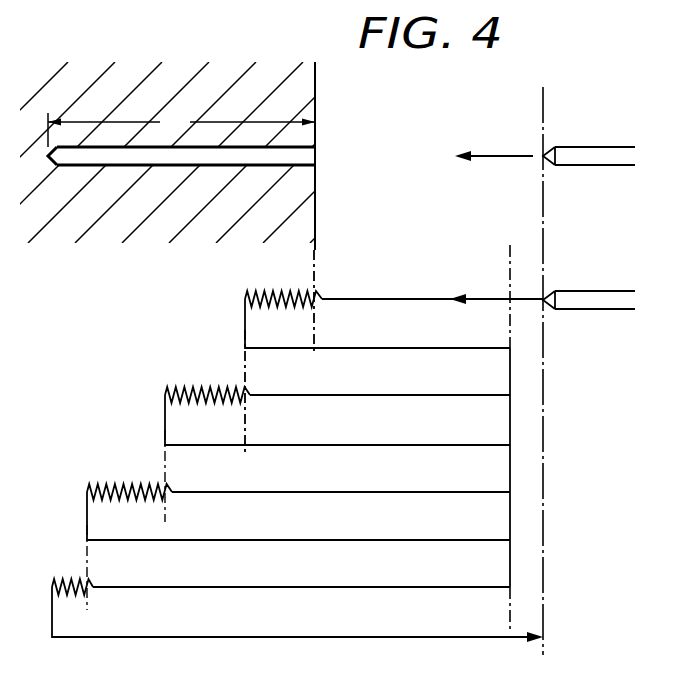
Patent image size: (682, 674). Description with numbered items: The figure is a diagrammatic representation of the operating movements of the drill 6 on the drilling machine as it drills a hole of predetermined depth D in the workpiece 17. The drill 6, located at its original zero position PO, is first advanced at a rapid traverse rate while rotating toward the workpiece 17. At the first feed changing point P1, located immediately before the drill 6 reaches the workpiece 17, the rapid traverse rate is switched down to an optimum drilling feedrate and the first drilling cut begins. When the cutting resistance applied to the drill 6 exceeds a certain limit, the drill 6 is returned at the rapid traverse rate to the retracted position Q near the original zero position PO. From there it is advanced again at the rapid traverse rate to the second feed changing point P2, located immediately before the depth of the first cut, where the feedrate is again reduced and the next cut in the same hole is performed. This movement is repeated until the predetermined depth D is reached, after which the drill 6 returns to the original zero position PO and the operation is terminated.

The workpiece 17 is at (316, 100).
The drill 6 is at (588, 152).
The predetermined depth D is at (181, 128).
The original zero position PO is at (545, 358).
The retracted position Q is at (510, 423).
The first feed changing point P1 is at (321, 297).
The second feed changing point P2 is at (253, 394).